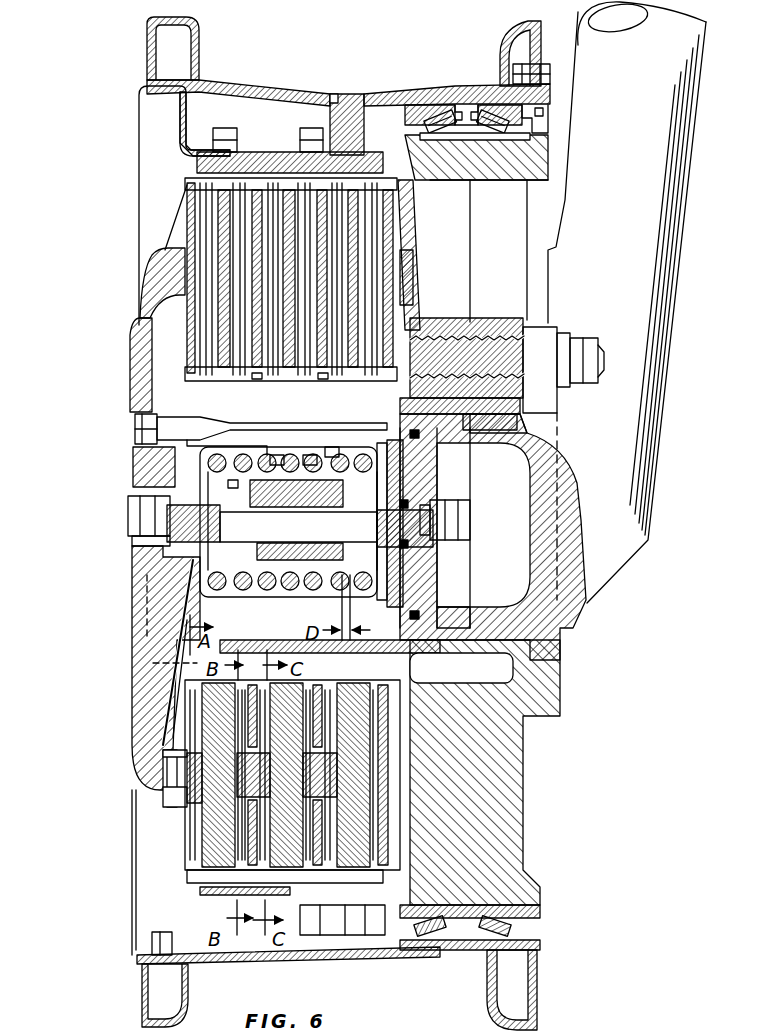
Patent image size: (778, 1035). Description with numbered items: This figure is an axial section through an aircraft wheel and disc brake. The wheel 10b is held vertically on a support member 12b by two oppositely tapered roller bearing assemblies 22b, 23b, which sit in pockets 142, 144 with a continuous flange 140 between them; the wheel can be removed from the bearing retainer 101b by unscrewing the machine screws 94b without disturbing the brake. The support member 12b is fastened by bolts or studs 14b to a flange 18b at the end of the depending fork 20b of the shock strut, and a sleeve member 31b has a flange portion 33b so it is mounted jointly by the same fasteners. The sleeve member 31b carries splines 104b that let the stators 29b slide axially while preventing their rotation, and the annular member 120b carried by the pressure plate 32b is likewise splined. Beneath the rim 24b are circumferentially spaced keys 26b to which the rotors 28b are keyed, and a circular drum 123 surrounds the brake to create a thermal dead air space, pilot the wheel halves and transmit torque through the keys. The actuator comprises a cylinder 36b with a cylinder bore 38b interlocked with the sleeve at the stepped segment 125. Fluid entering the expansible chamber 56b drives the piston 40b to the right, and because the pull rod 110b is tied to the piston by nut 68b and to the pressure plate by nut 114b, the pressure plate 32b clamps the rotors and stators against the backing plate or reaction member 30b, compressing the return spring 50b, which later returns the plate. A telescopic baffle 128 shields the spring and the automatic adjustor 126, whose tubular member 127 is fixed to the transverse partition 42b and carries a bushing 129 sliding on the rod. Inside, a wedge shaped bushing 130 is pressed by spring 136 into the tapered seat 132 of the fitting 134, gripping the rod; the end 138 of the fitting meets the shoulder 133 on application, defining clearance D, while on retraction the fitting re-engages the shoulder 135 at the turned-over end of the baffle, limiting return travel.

The rim 24b is at (248, 100).
The wheel 10b is at (336, 90).
The continuous flange 140 is at (462, 84).
The machine screws 94b is at (553, 80).
The bearing retainer 101b is at (550, 103).
The pocket 142 is at (550, 157).
The support member 12b is at (517, 218).
The pocket 144 is at (423, 172).
The circular drum 123 is at (183, 113).
The keys 26b is at (200, 167).
The stators 29b is at (322, 237).
The backing plate or reaction member 30b is at (408, 280).
The annular member 120b is at (190, 317).
The pressure plate 32b is at (140, 347).
The splines 104b is at (210, 395).
The tapered seat 132 is at (277, 457).
The wedge shaped bushing 130 is at (310, 460).
The fitting 134 is at (332, 450).
The bolts or studs 14b is at (583, 355).
The sleeve member 31b is at (523, 400).
The stepped segment 125 is at (470, 422).
The cylinder 36b is at (483, 443).
The expansible chamber 56b is at (407, 444).
The transverse partition 42b is at (400, 472).
The shoulder 133 is at (420, 493).
The pull rod 110b is at (128, 518).
The nut 68b is at (133, 540).
The spring 136 is at (313, 543).
The end of the fitting 138 is at (348, 560).
The nut 114b is at (450, 528).
The bushing 129 is at (200, 557).
The piston 40b is at (400, 580).
The return spring 50b is at (200, 597).
The cylinder bore 38b is at (450, 620).
The telescopic baffle 128 is at (193, 620).
The automatic adjustor 126 is at (293, 577).
The tubular member 127 is at (340, 580).
The shoulder 135 is at (230, 483).
The depending fork 20b is at (597, 594).
The flange portion 33b is at (540, 680).
The flange 18b is at (550, 707).
The rotors 28b is at (352, 840).
The roller bearing assembly 22b is at (487, 910).
The roller bearing assembly 23b is at (443, 937).